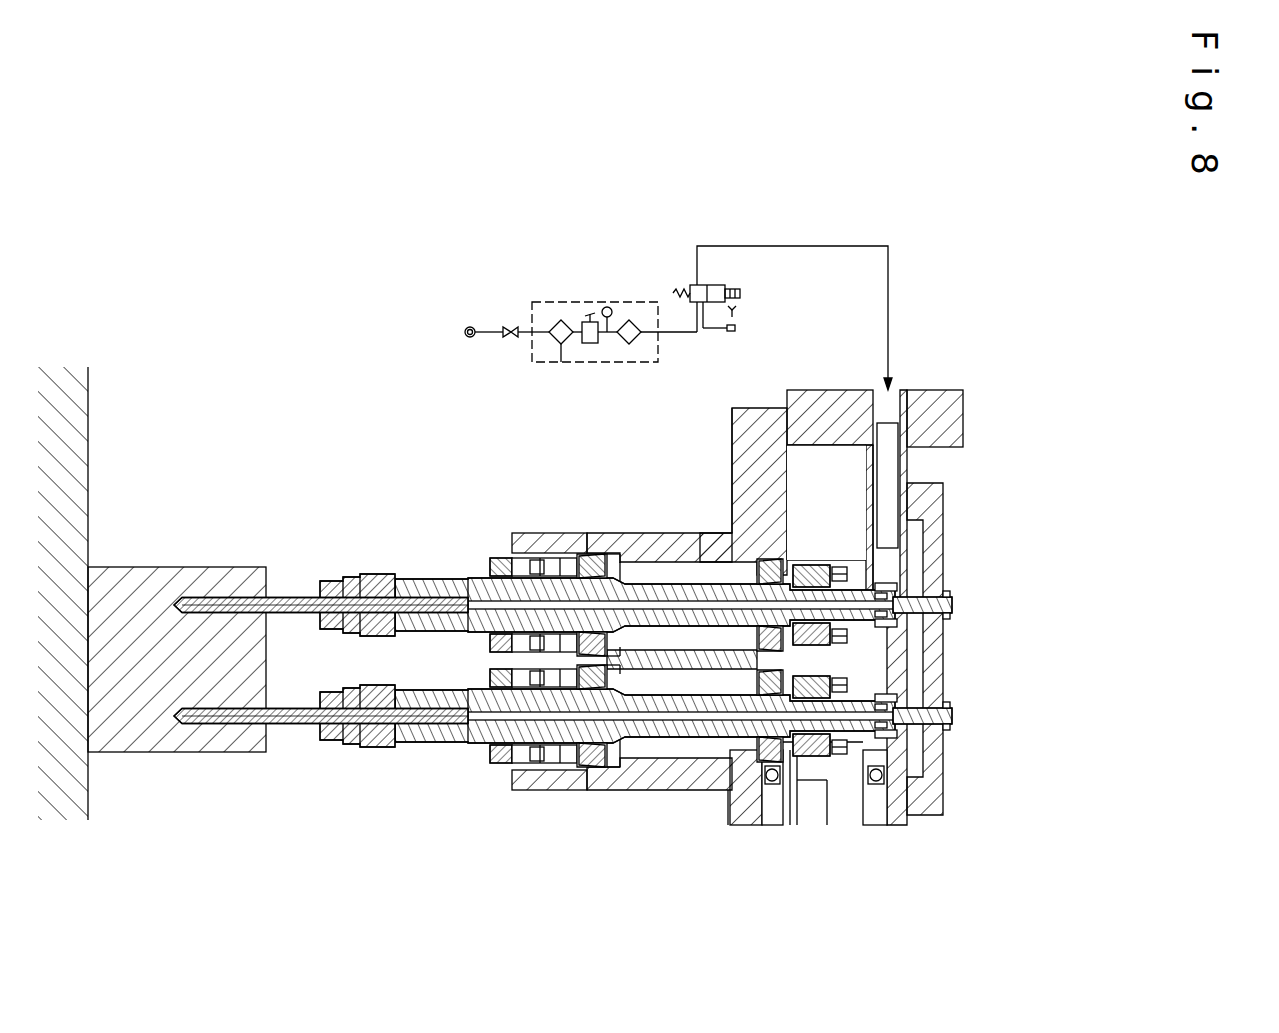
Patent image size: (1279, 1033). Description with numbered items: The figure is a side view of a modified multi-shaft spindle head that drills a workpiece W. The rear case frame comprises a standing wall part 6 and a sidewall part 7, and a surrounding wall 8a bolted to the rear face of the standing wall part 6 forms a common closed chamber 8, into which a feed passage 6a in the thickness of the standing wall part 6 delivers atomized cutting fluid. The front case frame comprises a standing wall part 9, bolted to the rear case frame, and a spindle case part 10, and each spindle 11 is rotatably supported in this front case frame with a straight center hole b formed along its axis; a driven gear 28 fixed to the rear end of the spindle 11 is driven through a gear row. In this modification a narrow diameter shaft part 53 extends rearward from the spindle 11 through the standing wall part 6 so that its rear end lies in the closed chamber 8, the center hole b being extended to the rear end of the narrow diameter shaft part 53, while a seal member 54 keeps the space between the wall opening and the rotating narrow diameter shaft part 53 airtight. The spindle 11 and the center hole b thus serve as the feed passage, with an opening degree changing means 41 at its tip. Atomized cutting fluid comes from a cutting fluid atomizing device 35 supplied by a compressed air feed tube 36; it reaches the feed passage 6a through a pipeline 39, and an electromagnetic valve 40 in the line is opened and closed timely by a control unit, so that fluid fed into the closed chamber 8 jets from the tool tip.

The workpiece W is at (130, 567).
The standing wall part 6 is at (866, 470).
The feed passage 6a is at (905, 390).
The sidewall part 7 is at (800, 390).
The closed chamber 8 is at (915, 648).
The surrounding wall 8a is at (947, 577).
The standing wall part 9 is at (732, 440).
The spindle case part 10 is at (572, 533).
The spindle 11 is at (420, 573).
The center hole b is at (675, 605).
The driven gear 28 is at (803, 563).
The cutting fluid atomizing device 35 is at (598, 302).
The compressed air feed tube 36 is at (492, 330).
The pipeline 39 is at (790, 246).
The electromagnetic valve 40 is at (720, 282).
The opening degree changing means 41 is at (955, 605).
The narrow diameter shaft part 53 is at (865, 587).
The seal member 54 is at (945, 582).